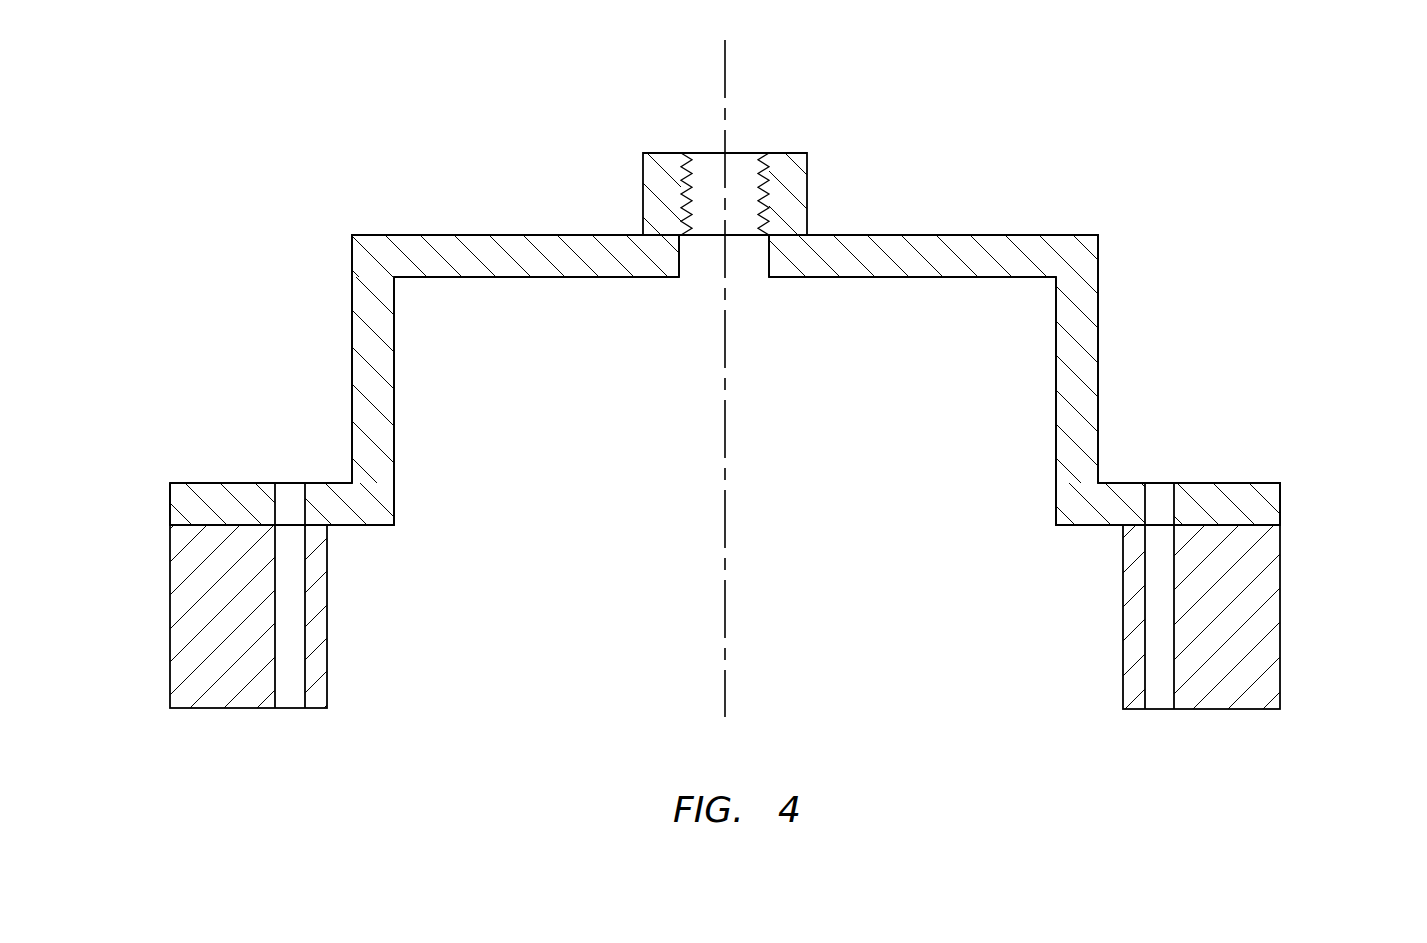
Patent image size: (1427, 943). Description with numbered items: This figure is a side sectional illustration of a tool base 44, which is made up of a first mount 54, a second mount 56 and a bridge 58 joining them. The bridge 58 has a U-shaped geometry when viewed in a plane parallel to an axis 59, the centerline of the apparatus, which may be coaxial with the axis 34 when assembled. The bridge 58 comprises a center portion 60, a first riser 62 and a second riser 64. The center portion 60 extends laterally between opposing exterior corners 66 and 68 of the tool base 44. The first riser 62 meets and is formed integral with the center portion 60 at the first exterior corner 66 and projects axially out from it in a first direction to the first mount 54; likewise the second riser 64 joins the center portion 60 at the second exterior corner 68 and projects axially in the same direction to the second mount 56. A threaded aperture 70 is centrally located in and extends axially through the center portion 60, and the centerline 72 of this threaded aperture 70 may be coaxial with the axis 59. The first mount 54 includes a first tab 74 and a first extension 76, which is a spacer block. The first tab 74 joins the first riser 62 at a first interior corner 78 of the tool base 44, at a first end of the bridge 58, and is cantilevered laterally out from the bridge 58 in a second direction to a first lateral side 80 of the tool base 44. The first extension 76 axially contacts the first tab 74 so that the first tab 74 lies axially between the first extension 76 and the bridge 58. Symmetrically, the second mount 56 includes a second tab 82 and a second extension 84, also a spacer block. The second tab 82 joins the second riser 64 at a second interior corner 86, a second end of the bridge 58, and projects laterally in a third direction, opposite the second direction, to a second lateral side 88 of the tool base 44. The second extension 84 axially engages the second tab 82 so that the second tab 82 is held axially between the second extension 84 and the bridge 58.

The tool base 44 is at (746, 290).
The bridge 58 is at (746, 304).
The center portion 60 is at (872, 232).
The first riser 62 is at (338, 352).
The second riser 64 is at (1100, 358).
The first exterior corner 66 is at (352, 235).
The second exterior corner 68 is at (1098, 235).
The threaded aperture 70 is at (745, 172).
The first tab 74 is at (220, 481).
The first extension 76 is at (168, 630).
The first interior corner 78 is at (394, 525).
The first lateral side 80 is at (170, 505).
The first mount 54 is at (256, 551).
The second tab 82 is at (1222, 481).
The second extension 84 is at (1285, 640).
The second interior corner 86 is at (1056, 525).
The second lateral side 88 is at (1280, 503).
The second mount 56 is at (1188, 553).
The axis 34 is at (819, 384).
The axis 59 is at (819, 384).
The centerline 72 is at (725, 699).